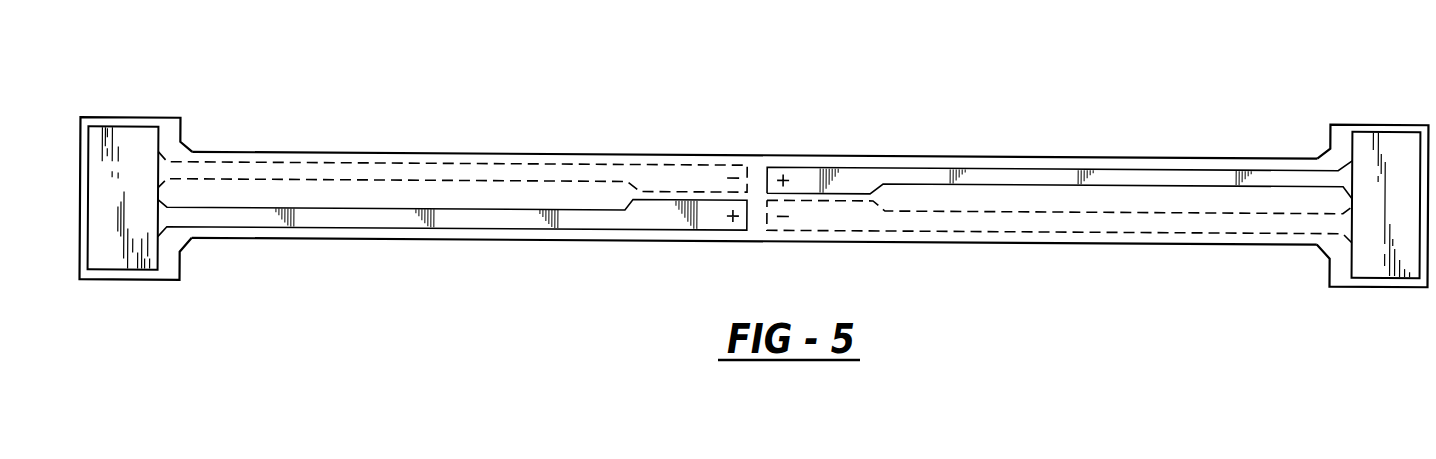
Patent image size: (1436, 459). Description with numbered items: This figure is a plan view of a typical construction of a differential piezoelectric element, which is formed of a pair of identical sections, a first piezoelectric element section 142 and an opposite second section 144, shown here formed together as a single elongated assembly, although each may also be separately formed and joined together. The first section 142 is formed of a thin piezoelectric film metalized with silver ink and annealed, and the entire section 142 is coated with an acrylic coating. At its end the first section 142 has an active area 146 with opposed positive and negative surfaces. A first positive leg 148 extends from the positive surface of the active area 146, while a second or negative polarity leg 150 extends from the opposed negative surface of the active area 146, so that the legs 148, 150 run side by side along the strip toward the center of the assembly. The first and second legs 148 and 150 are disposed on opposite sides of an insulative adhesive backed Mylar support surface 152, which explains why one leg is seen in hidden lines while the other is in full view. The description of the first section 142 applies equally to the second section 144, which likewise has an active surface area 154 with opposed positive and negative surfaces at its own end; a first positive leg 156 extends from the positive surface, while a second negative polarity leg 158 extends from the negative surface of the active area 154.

The first piezoelectric element section 142 is at (595, 118).
The second section 144 is at (1162, 83).
The active area 146 is at (147, 262).
The first positive leg 148 is at (383, 222).
The second negative polarity leg 150 is at (452, 162).
The insulative adhesive backed Mylar support surface 152 is at (597, 235).
The active surface area 154 is at (1368, 267).
The first positive leg 156 is at (1267, 177).
The second negative polarity leg 158 is at (1060, 232).